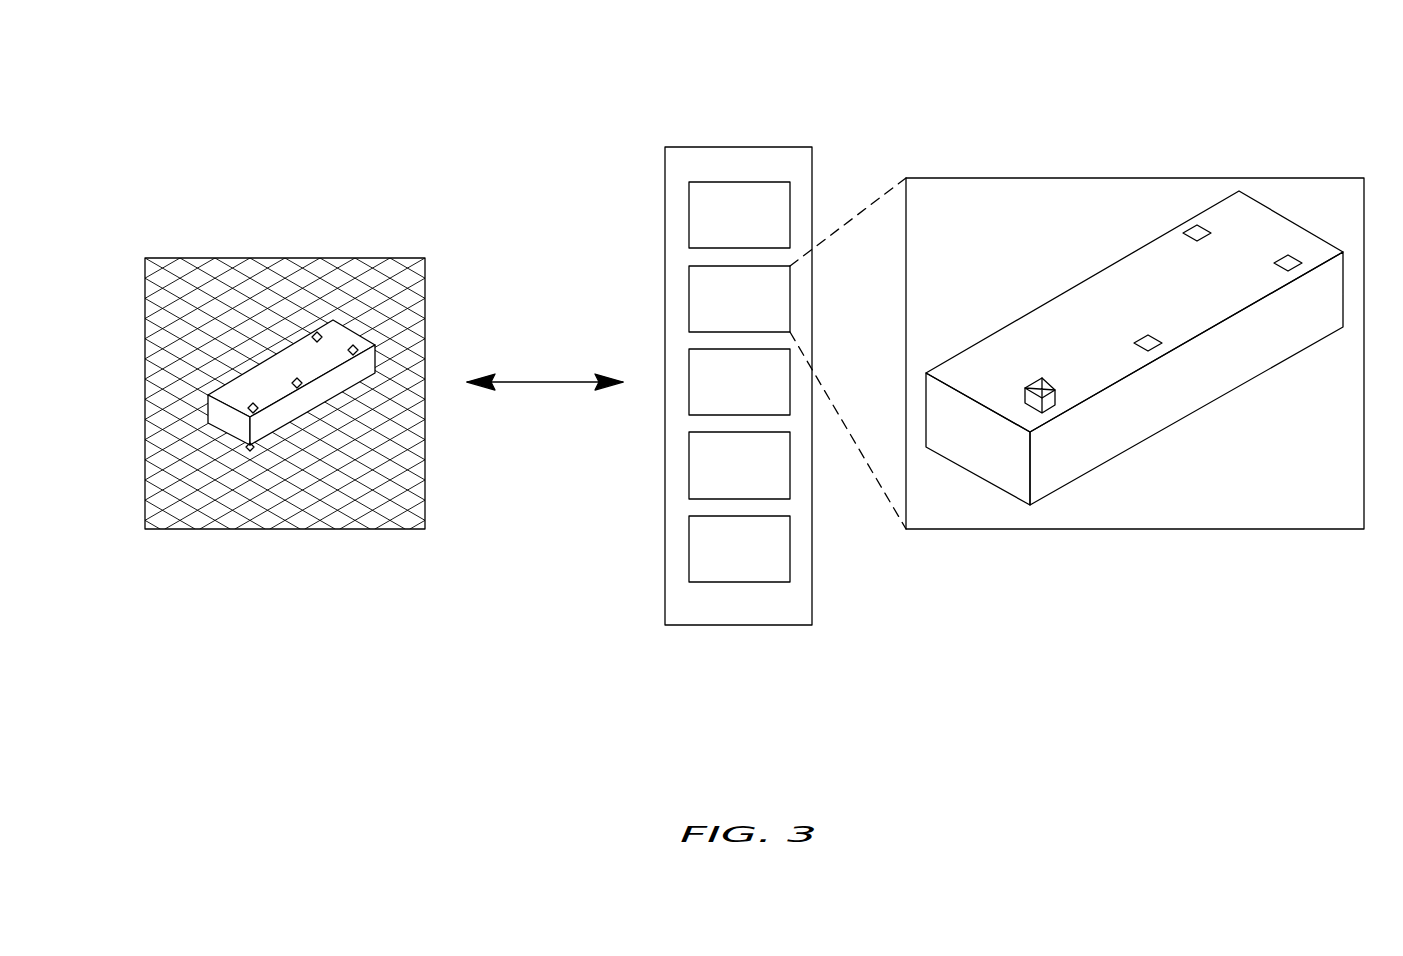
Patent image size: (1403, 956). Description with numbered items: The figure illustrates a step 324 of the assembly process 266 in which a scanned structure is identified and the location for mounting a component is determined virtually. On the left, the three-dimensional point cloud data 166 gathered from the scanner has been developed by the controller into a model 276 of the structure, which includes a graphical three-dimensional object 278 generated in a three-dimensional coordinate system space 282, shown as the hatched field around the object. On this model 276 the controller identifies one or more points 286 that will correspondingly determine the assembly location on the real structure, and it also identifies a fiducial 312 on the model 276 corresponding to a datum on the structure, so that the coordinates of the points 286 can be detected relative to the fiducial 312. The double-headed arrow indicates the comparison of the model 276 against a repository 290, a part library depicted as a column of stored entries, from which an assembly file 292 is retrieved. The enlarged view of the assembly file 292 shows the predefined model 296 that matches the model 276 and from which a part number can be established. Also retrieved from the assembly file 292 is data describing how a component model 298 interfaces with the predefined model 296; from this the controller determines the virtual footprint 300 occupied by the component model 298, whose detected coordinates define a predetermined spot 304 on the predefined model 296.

The 3D point cloud data 166 is at (255, 365).
The assembly process 266 is at (1163, 332).
The model 276 is at (291, 371).
The graphical 3D object 278 is at (291, 371).
The 3D coordinate system space 282 is at (403, 515).
The points 286 is at (247, 410).
The repository 290 is at (737, 147).
The assembly file 292 is at (1147, 178).
The predefined model 296 is at (1083, 281).
The component model 298 is at (1042, 485).
The virtual footprint 300 is at (992, 480).
The predetermined spot 304 is at (1027, 410).
The fiducial 312 is at (255, 447).
The step 324 is at (241, 358).